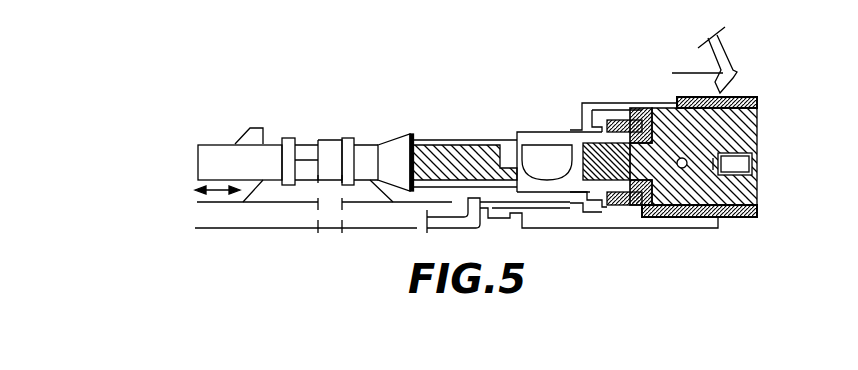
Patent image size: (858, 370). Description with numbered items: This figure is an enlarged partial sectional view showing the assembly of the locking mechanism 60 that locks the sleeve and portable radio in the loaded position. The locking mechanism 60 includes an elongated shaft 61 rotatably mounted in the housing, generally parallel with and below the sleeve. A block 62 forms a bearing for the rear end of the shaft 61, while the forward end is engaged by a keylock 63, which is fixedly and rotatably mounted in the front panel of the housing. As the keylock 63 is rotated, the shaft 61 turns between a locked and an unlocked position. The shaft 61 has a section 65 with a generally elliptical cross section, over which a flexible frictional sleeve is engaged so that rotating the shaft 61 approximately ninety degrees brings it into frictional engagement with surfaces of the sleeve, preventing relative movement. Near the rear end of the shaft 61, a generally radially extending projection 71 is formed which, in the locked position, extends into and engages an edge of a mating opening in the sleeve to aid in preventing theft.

The locking mechanism 60 is at (505, 85).
The elongated shaft 61 is at (216, 157).
The block 62 is at (325, 217).
The keylock 63 is at (757, 197).
The section 65 is at (467, 160).
The radially extending projection 71 is at (237, 142).